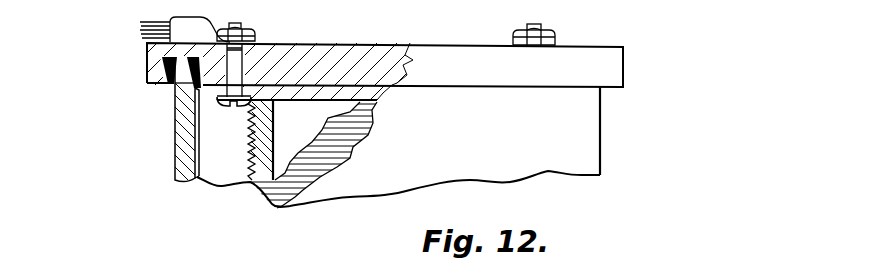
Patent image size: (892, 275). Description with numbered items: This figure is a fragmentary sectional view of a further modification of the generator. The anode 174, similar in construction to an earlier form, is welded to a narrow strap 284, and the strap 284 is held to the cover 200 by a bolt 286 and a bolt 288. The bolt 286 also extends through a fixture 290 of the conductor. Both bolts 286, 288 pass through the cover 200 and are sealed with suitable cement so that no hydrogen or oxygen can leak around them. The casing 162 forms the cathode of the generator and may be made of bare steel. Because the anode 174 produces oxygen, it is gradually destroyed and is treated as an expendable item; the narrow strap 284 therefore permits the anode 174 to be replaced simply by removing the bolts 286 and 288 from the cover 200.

The cover 200 is at (572, 58).
The casing 162 is at (176, 170).
The bolt 286 is at (246, 28).
The fixture 290 is at (186, 30).
The bolt 288 is at (540, 32).
The narrow strap 284 is at (327, 92).
The anode 174 is at (350, 162).